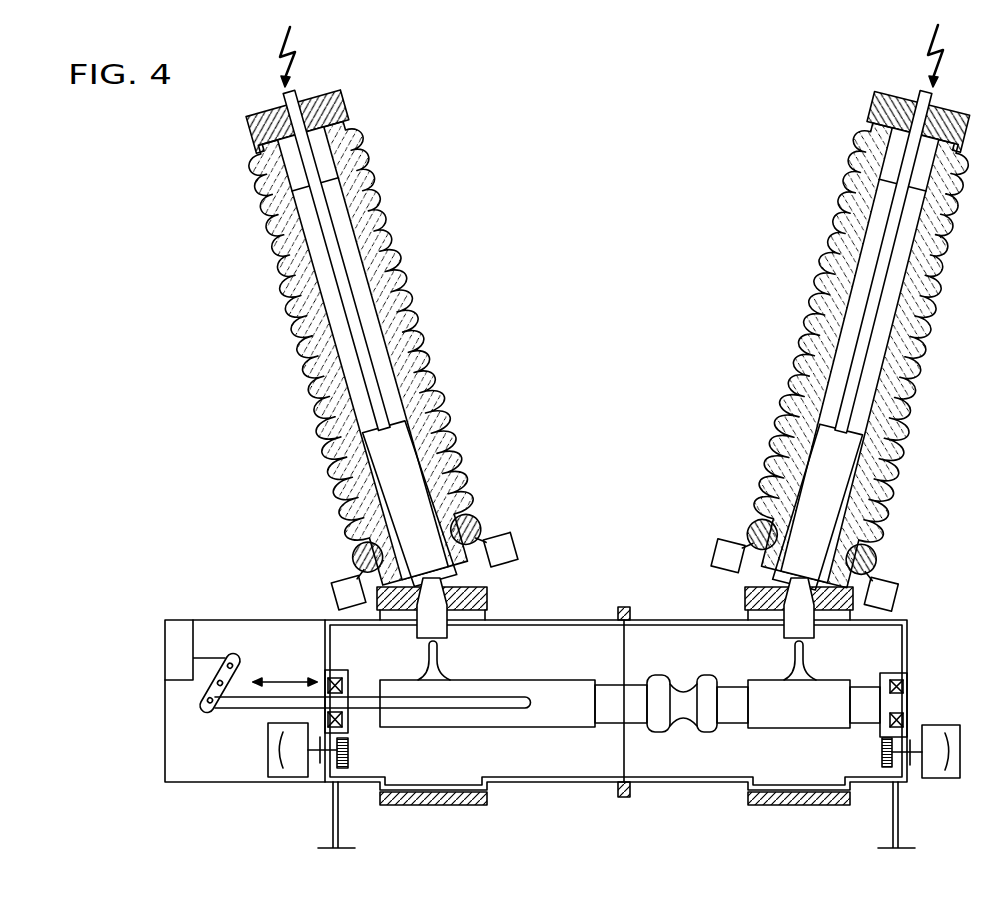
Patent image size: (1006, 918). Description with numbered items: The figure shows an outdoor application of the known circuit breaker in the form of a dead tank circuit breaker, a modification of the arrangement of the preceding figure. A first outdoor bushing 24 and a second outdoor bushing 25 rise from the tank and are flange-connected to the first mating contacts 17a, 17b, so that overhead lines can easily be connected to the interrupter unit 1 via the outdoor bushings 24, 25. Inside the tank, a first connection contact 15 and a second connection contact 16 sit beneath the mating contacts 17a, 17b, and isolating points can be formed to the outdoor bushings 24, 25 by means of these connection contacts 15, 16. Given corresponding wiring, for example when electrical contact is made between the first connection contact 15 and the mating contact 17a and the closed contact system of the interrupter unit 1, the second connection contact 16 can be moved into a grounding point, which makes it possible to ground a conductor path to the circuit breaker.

The interrupter unit 1 is at (542, 731).
The first connection contact 15 is at (435, 670).
The second connection contact 16 is at (807, 668).
The first mating contact 17a is at (417, 633).
The first mating contact 17b is at (787, 630).
The first outdoor bushing 24 is at (393, 228).
The second outdoor bushing 25 is at (830, 228).